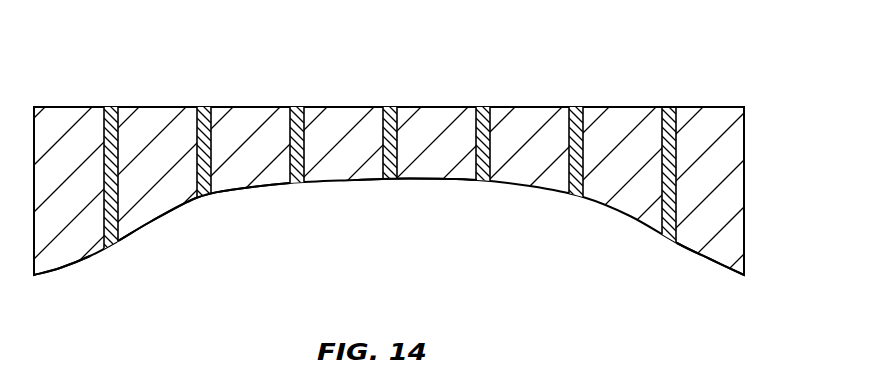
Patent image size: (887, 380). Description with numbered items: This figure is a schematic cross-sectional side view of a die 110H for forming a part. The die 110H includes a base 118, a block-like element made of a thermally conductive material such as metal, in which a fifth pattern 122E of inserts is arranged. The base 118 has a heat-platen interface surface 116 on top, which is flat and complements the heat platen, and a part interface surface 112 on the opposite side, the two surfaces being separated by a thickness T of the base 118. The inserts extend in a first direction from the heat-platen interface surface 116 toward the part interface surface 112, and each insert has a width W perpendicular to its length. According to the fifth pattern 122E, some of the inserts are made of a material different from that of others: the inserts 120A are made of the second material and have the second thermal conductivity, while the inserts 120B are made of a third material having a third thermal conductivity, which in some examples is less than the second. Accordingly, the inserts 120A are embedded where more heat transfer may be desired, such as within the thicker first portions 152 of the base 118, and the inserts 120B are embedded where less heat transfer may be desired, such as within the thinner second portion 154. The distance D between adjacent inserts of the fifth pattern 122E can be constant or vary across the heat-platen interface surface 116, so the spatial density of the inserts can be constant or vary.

The die 110H is at (746, 143).
The inserts 120A is at (112, 112).
The inserts 120B is at (300, 120).
The heat-platen interface surface 116 is at (135, 108).
The fifth pattern 122E is at (732, 95).
The base 118 is at (745, 250).
The part interface surface 112 is at (214, 197).
The first portions 152 is at (451, 184).
The second portion 154 is at (66, 277).
The width W is at (335, 143).
The thickness T is at (355, 188).
The distance D is at (583, 210).